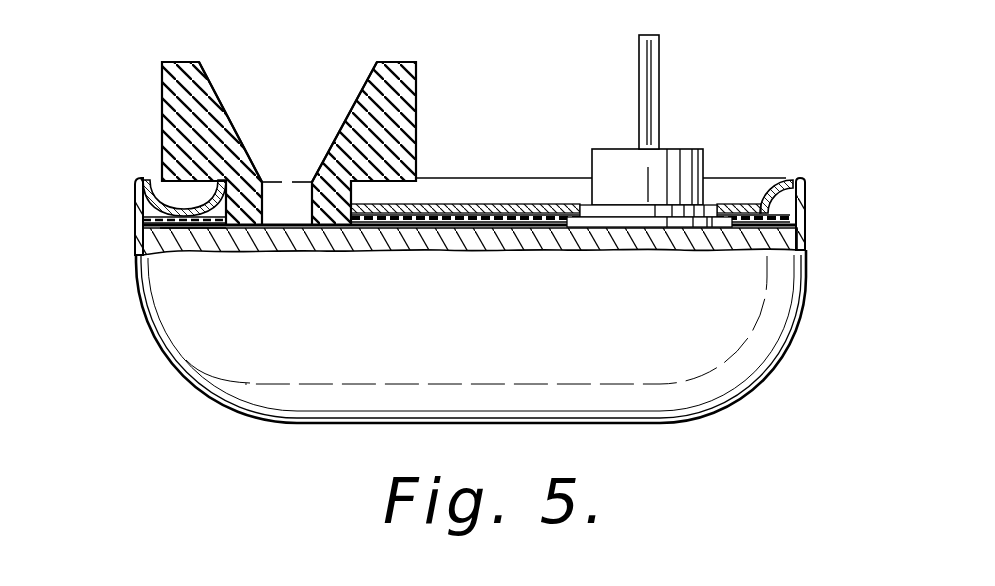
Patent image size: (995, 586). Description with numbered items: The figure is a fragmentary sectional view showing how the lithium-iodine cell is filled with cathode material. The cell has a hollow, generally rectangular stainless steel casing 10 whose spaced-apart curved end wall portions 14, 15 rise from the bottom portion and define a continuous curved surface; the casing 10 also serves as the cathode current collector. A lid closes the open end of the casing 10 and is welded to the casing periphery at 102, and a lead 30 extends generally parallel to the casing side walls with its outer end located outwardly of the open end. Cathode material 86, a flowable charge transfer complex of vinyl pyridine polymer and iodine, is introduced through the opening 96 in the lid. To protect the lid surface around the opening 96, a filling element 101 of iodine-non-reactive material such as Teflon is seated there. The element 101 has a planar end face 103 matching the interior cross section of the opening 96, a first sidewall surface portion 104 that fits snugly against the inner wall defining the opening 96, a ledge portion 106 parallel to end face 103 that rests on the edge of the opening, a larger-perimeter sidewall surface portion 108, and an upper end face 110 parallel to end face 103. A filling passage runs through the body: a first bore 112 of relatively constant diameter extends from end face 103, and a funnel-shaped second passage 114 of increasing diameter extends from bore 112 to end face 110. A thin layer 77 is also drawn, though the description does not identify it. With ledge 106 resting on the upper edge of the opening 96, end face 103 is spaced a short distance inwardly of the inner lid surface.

The casing 10 is at (243, 440).
The curved end wall portion 14 is at (137, 257).
The curved end wall portion 15 is at (806, 268).
The lead 30 is at (660, 46).
The thin plate 77 is at (490, 204).
The cathode material 86 is at (574, 248).
The opening 96 is at (200, 237).
The filling element 101 is at (289, 117).
The weld 102 is at (828, 132).
The planar end face 103 is at (237, 255).
The first sidewall surface portion 104 is at (358, 254).
The ledge portion 106 is at (143, 197).
The sidewall surface portion 108 is at (160, 113).
The end face 110 is at (185, 62).
The first bore 112 is at (294, 205).
The second passage 114 is at (346, 62).